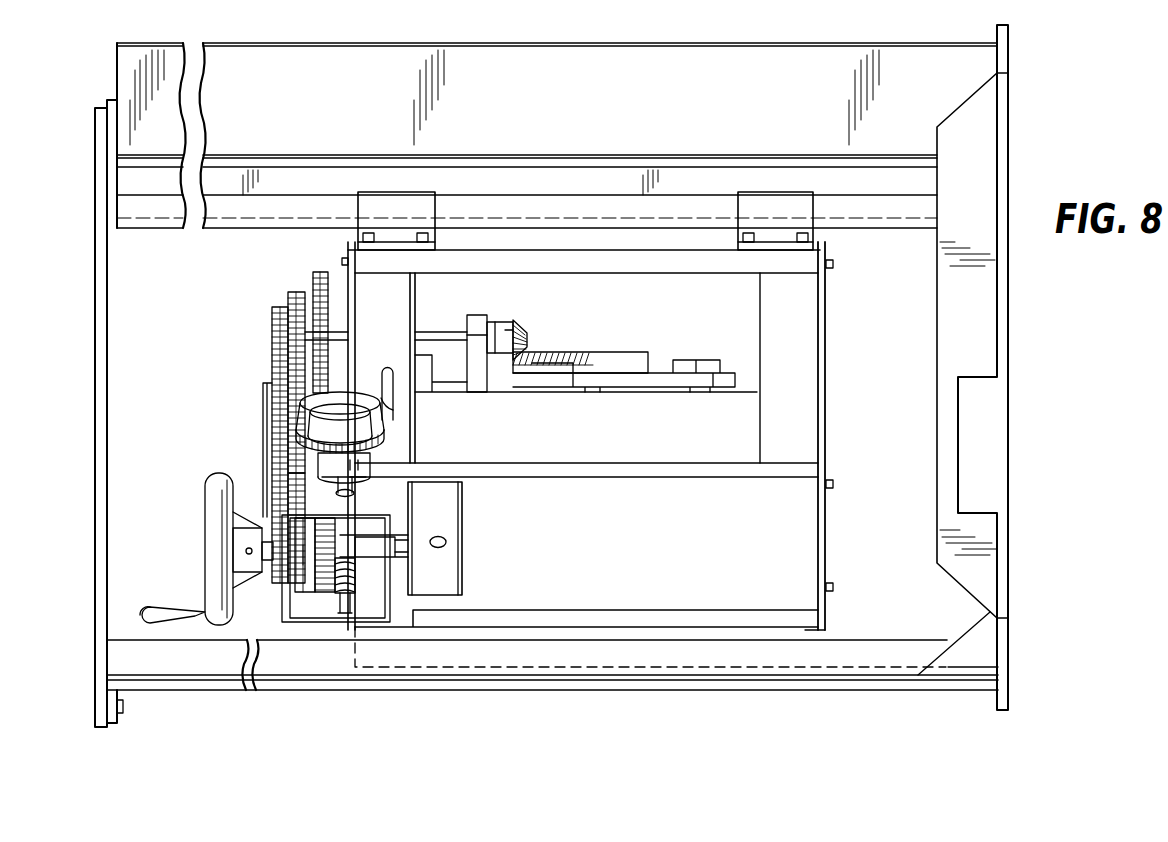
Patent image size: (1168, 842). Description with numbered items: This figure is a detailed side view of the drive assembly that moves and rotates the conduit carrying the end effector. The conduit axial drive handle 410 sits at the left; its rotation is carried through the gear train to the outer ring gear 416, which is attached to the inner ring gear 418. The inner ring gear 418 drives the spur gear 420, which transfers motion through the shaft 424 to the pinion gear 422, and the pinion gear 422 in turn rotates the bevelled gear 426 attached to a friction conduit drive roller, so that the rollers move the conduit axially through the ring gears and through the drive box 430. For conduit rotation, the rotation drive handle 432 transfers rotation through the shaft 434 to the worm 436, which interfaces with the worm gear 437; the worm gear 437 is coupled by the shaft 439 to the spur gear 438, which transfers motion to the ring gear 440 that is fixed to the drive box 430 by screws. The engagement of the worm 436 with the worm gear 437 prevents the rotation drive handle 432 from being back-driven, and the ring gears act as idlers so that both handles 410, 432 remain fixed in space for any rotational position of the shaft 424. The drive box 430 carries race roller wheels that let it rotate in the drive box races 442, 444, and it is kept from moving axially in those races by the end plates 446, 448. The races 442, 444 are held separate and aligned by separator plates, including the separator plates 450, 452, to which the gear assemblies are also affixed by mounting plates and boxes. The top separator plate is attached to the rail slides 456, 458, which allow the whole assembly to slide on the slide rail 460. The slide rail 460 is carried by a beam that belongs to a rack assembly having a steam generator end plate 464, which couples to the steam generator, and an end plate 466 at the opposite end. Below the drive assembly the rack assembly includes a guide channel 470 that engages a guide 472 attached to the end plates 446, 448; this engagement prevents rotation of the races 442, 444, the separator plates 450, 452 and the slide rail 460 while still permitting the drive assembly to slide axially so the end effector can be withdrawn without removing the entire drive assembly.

The conduit axial drive handle 410 is at (205, 530).
The outer ring gear 416 is at (272, 318).
The inner ring gear 418 is at (277, 457).
The spur gear 420 is at (290, 292).
The pinion gear 422 is at (522, 330).
The shaft 424 is at (441, 340).
The bevelled gear 426 is at (582, 352).
The drive box 430 is at (665, 445).
The rotation drive handle 432 is at (288, 432).
The shaft 434 is at (338, 488).
The worm gear 436 is at (337, 590).
The worm gear 437 is at (380, 535).
The spur gear 438 is at (314, 590).
The shaft 439 is at (380, 557).
The ring gear 440 is at (320, 275).
The drive box race 442 is at (797, 357).
The drive box race 444 is at (402, 296).
The end plate 446 is at (822, 403).
The end plate 448 is at (343, 297).
The separator plate 450 is at (807, 552).
The separator plate 452 is at (660, 265).
The rail slide 456 is at (805, 200).
The rail slide 458 is at (396, 200).
The slide rail 460 is at (605, 208).
The steam generator end plate 464 is at (938, 258).
The end plate 466 is at (108, 397).
The guide channel 470 is at (858, 662).
The guide 472 is at (805, 632).